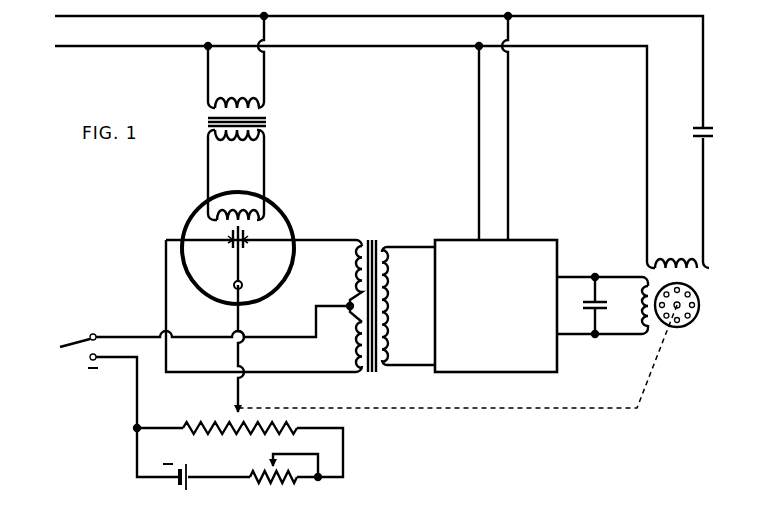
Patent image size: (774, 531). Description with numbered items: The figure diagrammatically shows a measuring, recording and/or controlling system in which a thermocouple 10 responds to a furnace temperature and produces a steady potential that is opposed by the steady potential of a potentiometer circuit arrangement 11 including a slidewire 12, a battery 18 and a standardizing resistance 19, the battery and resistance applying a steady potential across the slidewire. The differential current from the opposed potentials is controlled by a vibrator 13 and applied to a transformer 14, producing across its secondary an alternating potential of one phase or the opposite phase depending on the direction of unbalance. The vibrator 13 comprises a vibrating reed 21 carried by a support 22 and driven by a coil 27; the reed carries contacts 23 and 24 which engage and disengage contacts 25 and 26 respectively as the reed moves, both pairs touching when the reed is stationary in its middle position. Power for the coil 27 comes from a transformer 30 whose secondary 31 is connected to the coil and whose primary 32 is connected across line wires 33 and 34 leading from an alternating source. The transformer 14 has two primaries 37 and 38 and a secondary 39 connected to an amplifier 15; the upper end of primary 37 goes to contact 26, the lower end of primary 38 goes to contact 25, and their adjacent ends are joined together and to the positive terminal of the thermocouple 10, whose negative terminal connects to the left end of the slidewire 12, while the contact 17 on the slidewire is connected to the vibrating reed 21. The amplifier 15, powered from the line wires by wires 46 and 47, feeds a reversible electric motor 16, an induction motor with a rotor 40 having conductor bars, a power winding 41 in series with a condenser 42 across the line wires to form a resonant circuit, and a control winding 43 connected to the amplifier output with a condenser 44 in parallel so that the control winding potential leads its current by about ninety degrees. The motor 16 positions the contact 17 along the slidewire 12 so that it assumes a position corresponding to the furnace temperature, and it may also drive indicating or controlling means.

The thermocouple 10 is at (68, 342).
The potentiometer circuit arrangement 11 is at (112, 430).
The slidewire 12 is at (216, 433).
The vibrator 13 is at (211, 238).
The transformer 14 is at (376, 277).
The amplifier 15 is at (511, 194).
The reversible electric motor 16 is at (698, 331).
The contact 17 is at (234, 413).
The battery 18 is at (182, 491).
The standardizing resistance 19 is at (276, 486).
The vibrating reed 21 is at (234, 271).
The support 22 is at (244, 284).
The contact 23 is at (231, 249).
The contact 24 is at (246, 249).
The contact 25 is at (226, 242).
The contact 26 is at (250, 242).
The coil 27 is at (236, 206).
The transformer 30 is at (272, 115).
The secondary 31 is at (235, 140).
The primary 32 is at (230, 106).
The line wire 33 is at (350, 46).
The line wire 34 is at (350, 16).
The primary 37 is at (353, 276).
The primary 38 is at (353, 344).
The secondary 39 is at (391, 302).
The rotor 40 is at (699, 329).
The power winding 41 is at (678, 259).
The condenser 42 is at (712, 135).
The control winding 43 is at (636, 311).
The condenser 44 is at (601, 300).
The wire 46 is at (478, 133).
The wire 47 is at (508, 133).